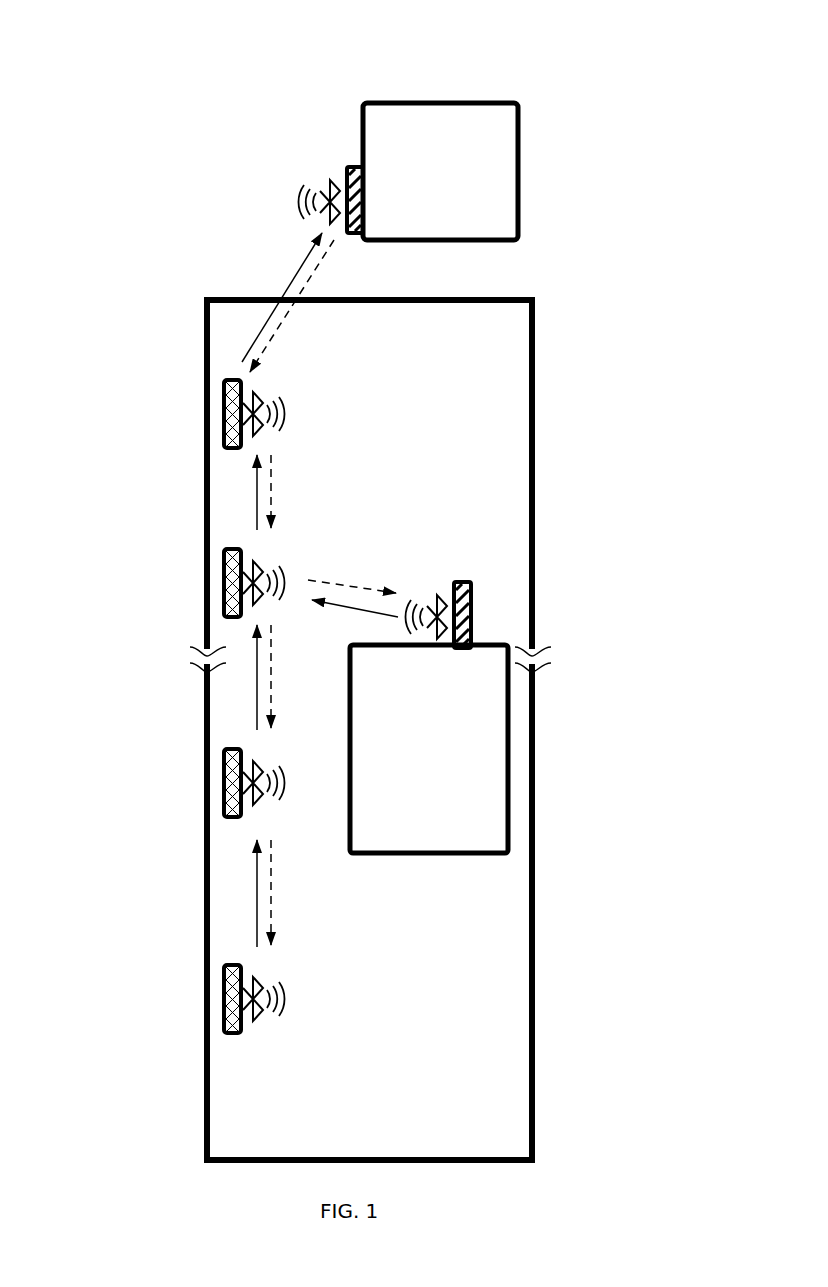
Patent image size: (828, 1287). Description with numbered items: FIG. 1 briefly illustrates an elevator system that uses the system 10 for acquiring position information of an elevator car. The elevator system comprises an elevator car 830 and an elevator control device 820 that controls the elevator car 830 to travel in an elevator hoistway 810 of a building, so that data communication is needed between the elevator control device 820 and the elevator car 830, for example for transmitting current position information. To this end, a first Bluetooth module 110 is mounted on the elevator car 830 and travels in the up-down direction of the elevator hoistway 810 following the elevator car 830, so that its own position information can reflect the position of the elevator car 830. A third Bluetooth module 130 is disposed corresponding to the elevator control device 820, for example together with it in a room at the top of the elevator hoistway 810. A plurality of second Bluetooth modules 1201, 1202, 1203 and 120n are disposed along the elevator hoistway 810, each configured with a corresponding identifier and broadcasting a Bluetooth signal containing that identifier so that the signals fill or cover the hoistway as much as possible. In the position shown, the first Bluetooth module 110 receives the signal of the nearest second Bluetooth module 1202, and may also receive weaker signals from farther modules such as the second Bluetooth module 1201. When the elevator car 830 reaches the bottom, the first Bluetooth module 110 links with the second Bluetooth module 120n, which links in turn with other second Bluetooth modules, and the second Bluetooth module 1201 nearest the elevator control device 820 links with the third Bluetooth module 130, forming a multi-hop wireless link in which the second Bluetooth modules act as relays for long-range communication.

The system for acquiring position information of an elevator car 10 is at (218, 146).
The first Bluetooth module 110 is at (473, 605).
The second Bluetooth module 1201 is at (222, 410).
The second Bluetooth module 1202 is at (222, 583).
The second Bluetooth module 1203 is at (222, 767).
The second Bluetooth module 120n is at (222, 985).
The third Bluetooth module 130 is at (348, 165).
The elevator hoistway 810 is at (526, 543).
The elevator control device 820 is at (518, 175).
The elevator car 830 is at (508, 807).